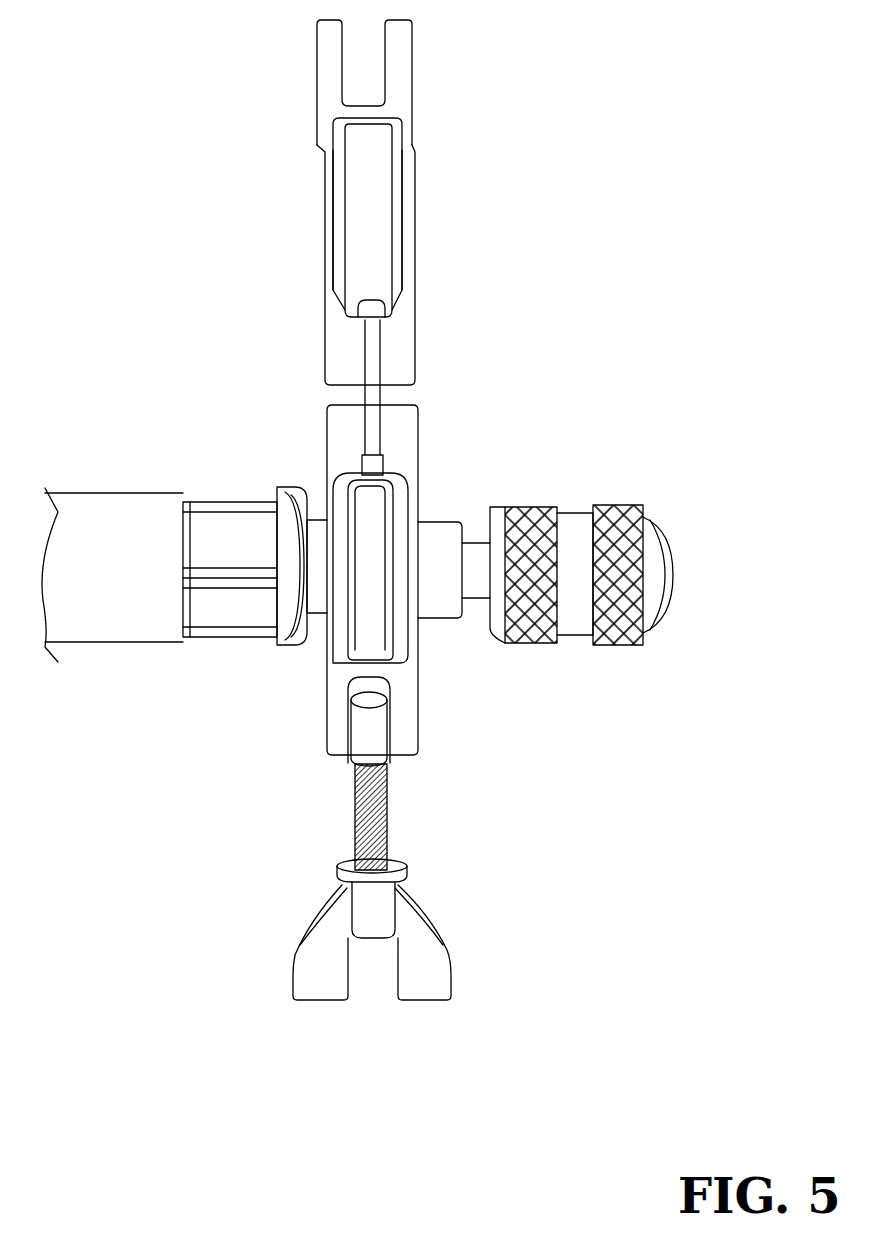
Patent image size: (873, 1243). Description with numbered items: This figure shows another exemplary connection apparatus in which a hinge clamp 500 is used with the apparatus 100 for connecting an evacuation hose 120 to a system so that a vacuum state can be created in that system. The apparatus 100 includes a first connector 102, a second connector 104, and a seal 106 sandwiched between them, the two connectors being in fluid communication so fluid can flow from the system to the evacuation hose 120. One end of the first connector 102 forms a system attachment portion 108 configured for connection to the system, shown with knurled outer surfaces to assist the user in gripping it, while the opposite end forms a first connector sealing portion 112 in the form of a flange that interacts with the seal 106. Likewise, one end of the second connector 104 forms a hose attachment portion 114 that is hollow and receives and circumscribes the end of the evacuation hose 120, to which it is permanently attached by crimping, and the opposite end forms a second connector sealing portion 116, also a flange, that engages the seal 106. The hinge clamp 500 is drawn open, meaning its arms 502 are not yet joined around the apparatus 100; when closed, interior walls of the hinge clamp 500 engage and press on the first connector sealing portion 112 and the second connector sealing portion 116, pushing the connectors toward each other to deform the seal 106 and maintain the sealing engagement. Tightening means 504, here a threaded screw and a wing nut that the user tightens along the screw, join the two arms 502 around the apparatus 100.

The apparatus 100 is at (600, 152).
The first connector 102 is at (542, 707).
The second connector 104 is at (275, 682).
The seal 106 is at (372, 641).
The system attachment portion 108 is at (575, 480).
The first connector sealing portion 112 is at (431, 494).
The hose attachment portion 114 is at (206, 470).
The second connector sealing portion 116 is at (316, 470).
The evacuation hose 120 is at (128, 641).
The hinge clamp 500 is at (265, 297).
The arms 502 is at (417, 292).
The tightening means 504 is at (435, 945).